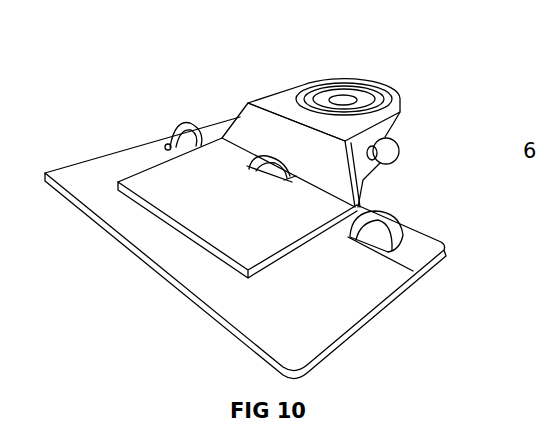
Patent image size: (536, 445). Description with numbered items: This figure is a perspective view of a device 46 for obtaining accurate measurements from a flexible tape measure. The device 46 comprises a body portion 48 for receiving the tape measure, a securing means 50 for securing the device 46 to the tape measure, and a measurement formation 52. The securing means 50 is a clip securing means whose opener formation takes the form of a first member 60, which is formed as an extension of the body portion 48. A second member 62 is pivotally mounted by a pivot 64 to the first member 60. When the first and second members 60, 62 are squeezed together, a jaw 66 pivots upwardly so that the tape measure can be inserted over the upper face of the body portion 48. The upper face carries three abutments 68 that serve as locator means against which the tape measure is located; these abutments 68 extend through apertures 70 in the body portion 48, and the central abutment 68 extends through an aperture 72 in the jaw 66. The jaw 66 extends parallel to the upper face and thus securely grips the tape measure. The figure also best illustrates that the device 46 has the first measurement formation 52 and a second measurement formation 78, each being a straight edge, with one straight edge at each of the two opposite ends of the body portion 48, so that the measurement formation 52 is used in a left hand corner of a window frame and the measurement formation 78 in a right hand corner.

The device 46 is at (447, 95).
The body portion 48 is at (366, 298).
The securing means 50 is at (273, 90).
The measurement formation 52 is at (96, 154).
The first member 60 is at (395, 152).
The second member 62 is at (382, 82).
The pivot 64 is at (374, 160).
The jaw 66 is at (218, 206).
The abutments 68 is at (188, 127).
The apertures 70 is at (168, 144).
The aperture 72 is at (290, 178).
The second measurement formation 78 is at (338, 349).